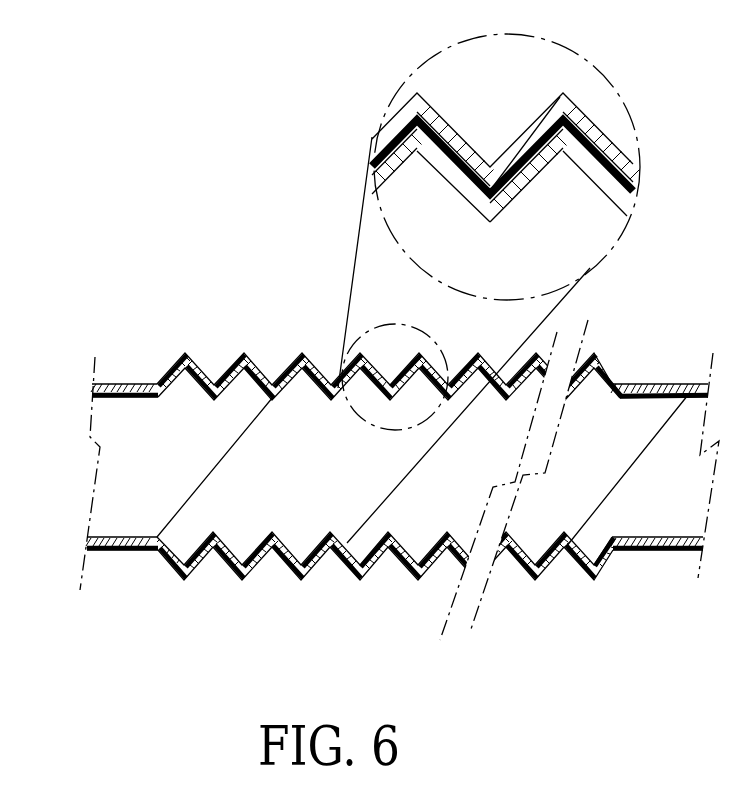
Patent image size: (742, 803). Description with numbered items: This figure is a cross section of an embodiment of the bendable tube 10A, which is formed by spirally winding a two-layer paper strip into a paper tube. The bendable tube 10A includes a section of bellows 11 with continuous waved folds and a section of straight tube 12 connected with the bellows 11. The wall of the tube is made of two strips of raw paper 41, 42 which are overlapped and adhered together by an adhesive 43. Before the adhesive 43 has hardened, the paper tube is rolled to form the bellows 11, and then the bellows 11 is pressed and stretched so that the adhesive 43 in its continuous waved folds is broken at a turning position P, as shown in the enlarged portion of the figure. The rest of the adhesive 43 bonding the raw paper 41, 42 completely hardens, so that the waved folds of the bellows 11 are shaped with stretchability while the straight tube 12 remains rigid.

The bendable tube 10A is at (167, 190).
The bellows 11 is at (245, 348).
The straight tube 12 is at (113, 378).
The raw paper 41 is at (593, 127).
The raw paper 42 is at (400, 163).
The adhesive 43 is at (638, 197).
The turning position P is at (491, 180).